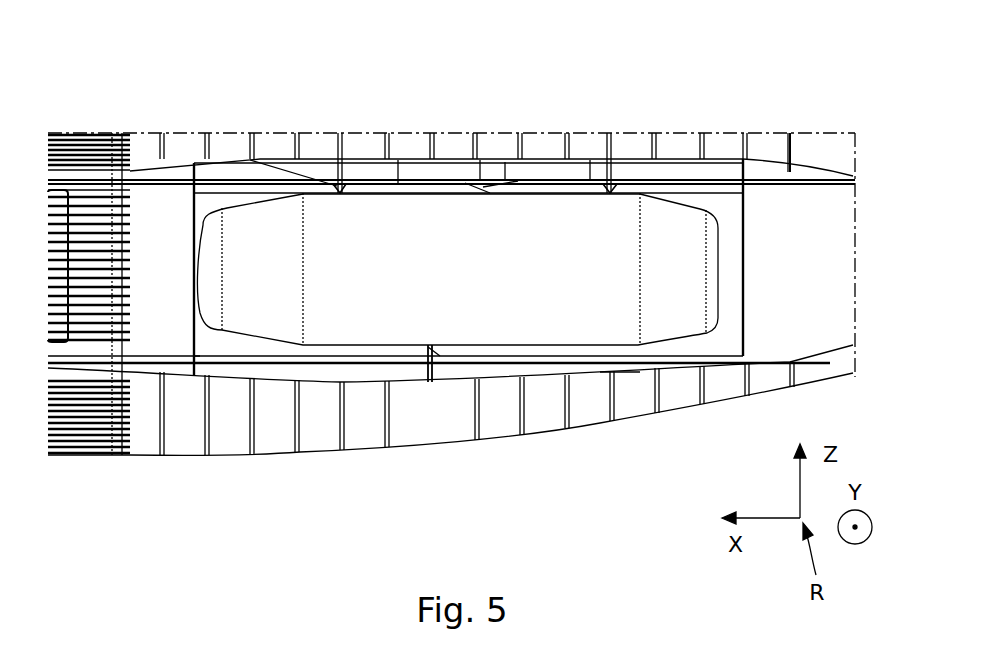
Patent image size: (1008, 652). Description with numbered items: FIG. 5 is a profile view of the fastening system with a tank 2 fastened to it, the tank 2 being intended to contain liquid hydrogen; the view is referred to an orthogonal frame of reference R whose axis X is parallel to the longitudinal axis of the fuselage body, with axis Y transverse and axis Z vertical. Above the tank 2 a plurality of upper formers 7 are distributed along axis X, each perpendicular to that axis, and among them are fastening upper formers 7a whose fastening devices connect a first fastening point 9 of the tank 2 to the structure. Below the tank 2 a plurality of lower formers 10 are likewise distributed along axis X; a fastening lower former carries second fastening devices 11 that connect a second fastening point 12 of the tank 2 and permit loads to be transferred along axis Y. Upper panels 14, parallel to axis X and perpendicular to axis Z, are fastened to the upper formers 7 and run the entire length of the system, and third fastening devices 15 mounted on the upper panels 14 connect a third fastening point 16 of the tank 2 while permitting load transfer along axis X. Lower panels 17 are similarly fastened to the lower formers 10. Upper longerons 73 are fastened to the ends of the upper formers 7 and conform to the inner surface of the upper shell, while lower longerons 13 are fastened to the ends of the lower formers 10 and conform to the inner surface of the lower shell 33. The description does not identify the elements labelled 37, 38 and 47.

The tank 2 is at (385, 272).
The upper former 7 is at (290, 134).
The fastening upper former 7a is at (338, 137).
The first fastening point 9 is at (337, 187).
The lower former 10 is at (250, 452).
The second fastening device 11 is at (428, 352).
The second fastening point 12 is at (433, 352).
The lower longeron 13 is at (237, 369).
The upper panel 14 is at (483, 187).
The third fastening device 15 is at (590, 170).
The third fastening point 16 is at (505, 162).
The lower panel 17 is at (570, 378).
The lower shell 33 is at (660, 413).
The fairing 37 is at (240, 134).
The mount 38 is at (436, 354).
The bracket 47 is at (465, 183).
The upper longeron 73 is at (398, 170).